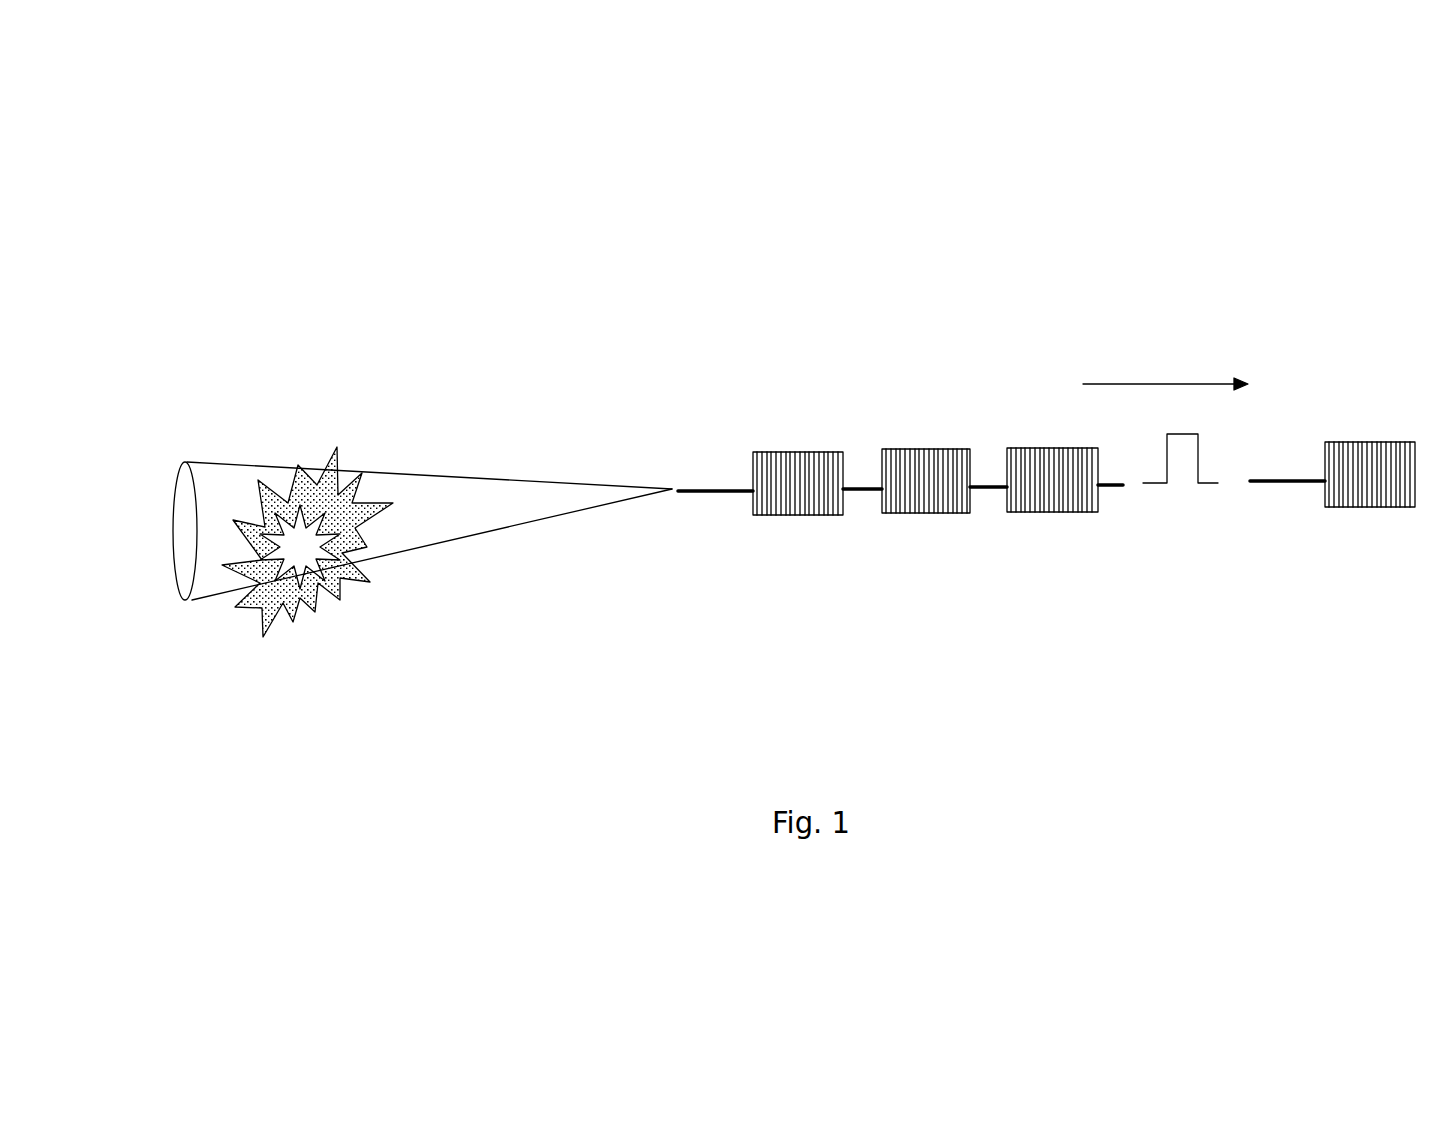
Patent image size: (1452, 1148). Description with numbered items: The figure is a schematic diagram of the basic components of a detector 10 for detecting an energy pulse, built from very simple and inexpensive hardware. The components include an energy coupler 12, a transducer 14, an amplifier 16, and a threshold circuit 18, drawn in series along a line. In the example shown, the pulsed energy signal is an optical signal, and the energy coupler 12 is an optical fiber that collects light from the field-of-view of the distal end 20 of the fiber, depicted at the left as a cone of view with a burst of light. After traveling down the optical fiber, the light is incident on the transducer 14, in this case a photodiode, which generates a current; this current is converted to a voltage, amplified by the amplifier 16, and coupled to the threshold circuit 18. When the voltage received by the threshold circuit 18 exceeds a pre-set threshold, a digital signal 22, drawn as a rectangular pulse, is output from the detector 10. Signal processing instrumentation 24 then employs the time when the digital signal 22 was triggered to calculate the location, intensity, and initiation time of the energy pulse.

The detector 10 is at (1043, 245).
The energy coupler 12 is at (730, 490).
The transducer 14 is at (805, 517).
The amplifier 16 is at (920, 517).
The threshold circuit 18 is at (1048, 517).
The distal end 20 is at (675, 480).
The digital signal 22 is at (1187, 495).
The signal processing instrumentation 24 is at (1363, 508).